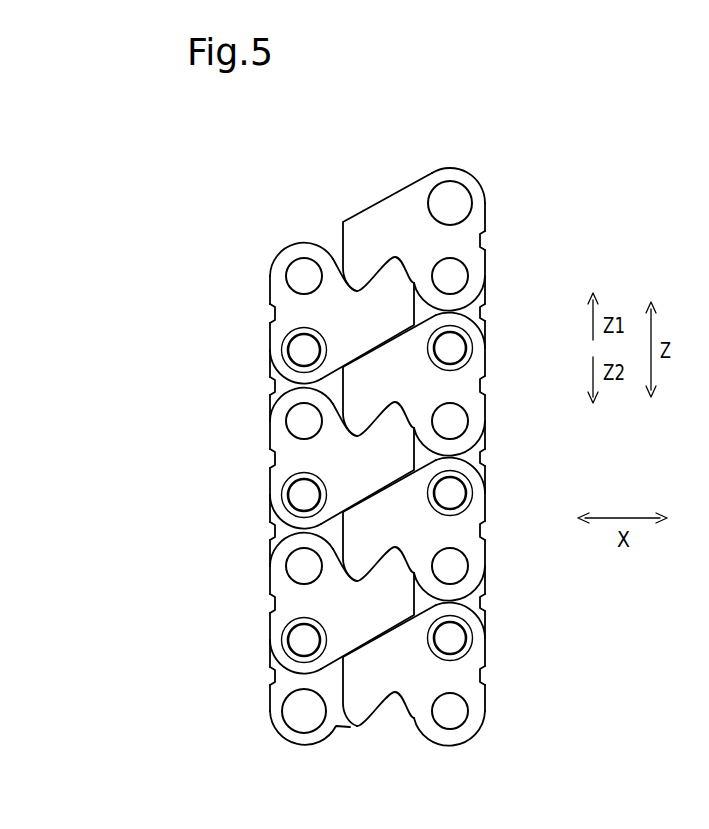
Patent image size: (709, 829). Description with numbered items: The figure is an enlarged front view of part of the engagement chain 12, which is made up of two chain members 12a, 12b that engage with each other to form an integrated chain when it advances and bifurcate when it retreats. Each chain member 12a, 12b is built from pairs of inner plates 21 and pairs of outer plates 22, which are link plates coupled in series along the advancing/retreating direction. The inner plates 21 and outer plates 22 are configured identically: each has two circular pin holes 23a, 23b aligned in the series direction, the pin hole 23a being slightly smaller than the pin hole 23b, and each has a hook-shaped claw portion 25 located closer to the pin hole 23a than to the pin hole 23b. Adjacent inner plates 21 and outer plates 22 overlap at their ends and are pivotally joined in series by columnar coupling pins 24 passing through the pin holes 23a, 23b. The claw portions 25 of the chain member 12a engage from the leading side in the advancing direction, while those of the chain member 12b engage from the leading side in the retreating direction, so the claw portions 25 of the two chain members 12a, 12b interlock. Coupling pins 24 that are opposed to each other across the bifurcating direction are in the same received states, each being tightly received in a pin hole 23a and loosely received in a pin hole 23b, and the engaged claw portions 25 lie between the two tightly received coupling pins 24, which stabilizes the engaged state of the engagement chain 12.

The engagement chain 12 is at (579, 156).
The chain member 12a is at (308, 222).
The chain member 12b is at (413, 162).
The inner plate 21 is at (270, 381).
The outer plate 22 is at (270, 292).
The pin hole 23a is at (458, 268).
The pin hole 23b is at (462, 191).
The coupling pin 24 is at (298, 267).
The claw portion 25 is at (395, 264).